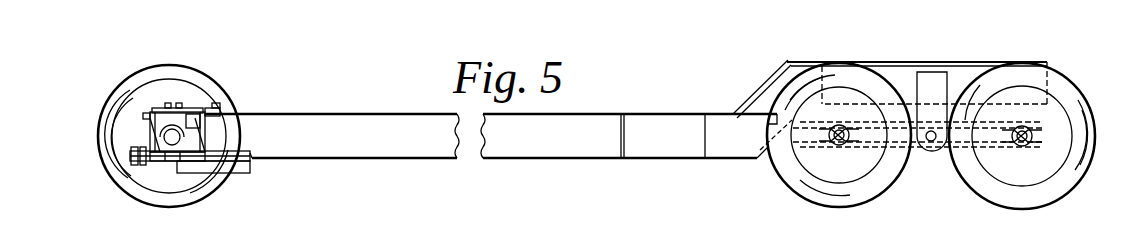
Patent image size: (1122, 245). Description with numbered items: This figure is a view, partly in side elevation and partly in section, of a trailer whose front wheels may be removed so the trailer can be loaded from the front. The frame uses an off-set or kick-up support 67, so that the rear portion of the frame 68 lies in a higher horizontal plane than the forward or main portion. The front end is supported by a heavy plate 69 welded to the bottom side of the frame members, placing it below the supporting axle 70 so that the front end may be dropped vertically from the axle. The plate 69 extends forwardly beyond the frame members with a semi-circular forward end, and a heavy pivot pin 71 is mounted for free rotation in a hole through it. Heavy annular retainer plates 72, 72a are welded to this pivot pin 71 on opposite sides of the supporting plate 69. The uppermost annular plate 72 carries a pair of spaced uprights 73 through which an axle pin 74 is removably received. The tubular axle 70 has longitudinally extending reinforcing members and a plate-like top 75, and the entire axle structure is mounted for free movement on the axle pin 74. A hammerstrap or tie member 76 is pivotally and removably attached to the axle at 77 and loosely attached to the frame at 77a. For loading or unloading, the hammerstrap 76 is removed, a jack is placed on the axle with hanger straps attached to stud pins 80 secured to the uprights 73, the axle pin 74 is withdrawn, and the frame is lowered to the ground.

The off-set or kick-up support 67 is at (757, 90).
The rear portion of the frame 68 is at (907, 71).
The heavy plate 69 is at (230, 162).
The supporting axle 70 is at (157, 137).
The pivot pin 71 is at (168, 165).
The annular retainer plate 72 is at (140, 153).
The annular retainer plate 72a is at (128, 165).
The spaced uprights 73 is at (153, 130).
The axle pin 74 is at (152, 122).
The plate-like top 75 is at (167, 108).
The hammerstrap or tie member 76 is at (197, 108).
The pivotal attachment of hammerstrap to axle 77 is at (178, 110).
The loose attachment of hammerstrap to frame 77a is at (220, 102).
The stud pins 80 is at (147, 113).